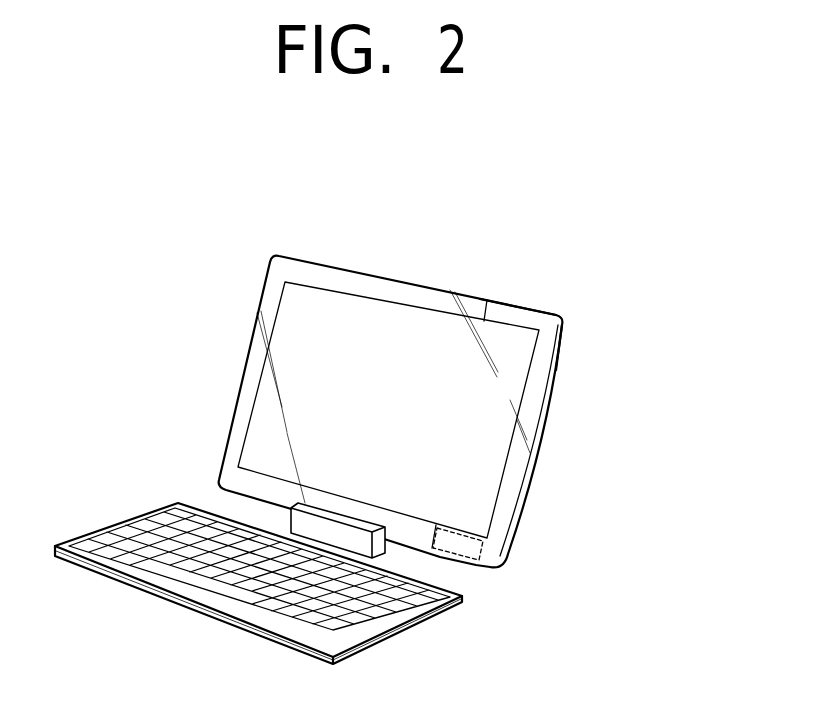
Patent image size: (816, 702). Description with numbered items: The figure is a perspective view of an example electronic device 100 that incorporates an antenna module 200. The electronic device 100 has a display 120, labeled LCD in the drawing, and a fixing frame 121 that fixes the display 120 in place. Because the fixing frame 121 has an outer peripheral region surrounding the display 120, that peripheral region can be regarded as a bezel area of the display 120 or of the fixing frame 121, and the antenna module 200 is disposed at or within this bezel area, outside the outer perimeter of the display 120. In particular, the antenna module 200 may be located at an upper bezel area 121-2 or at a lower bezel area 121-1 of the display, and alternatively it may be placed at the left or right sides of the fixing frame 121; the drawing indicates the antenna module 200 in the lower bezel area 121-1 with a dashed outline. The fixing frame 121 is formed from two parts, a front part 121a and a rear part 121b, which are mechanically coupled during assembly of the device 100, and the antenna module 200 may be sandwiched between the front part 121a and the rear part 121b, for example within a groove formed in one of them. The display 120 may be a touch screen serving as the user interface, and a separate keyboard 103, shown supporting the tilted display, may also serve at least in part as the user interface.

The electronic device 100 is at (491, 190).
The keyboard 103 is at (377, 645).
The display 120 is at (485, 478).
The fixing frame 121 is at (543, 368).
The front part 121a is at (555, 311).
The rear part 121b is at (568, 322).
The lower bezel area 121-1 is at (467, 548).
The upper bezel area 121-2 is at (514, 304).
The antenna module 200 is at (468, 570).